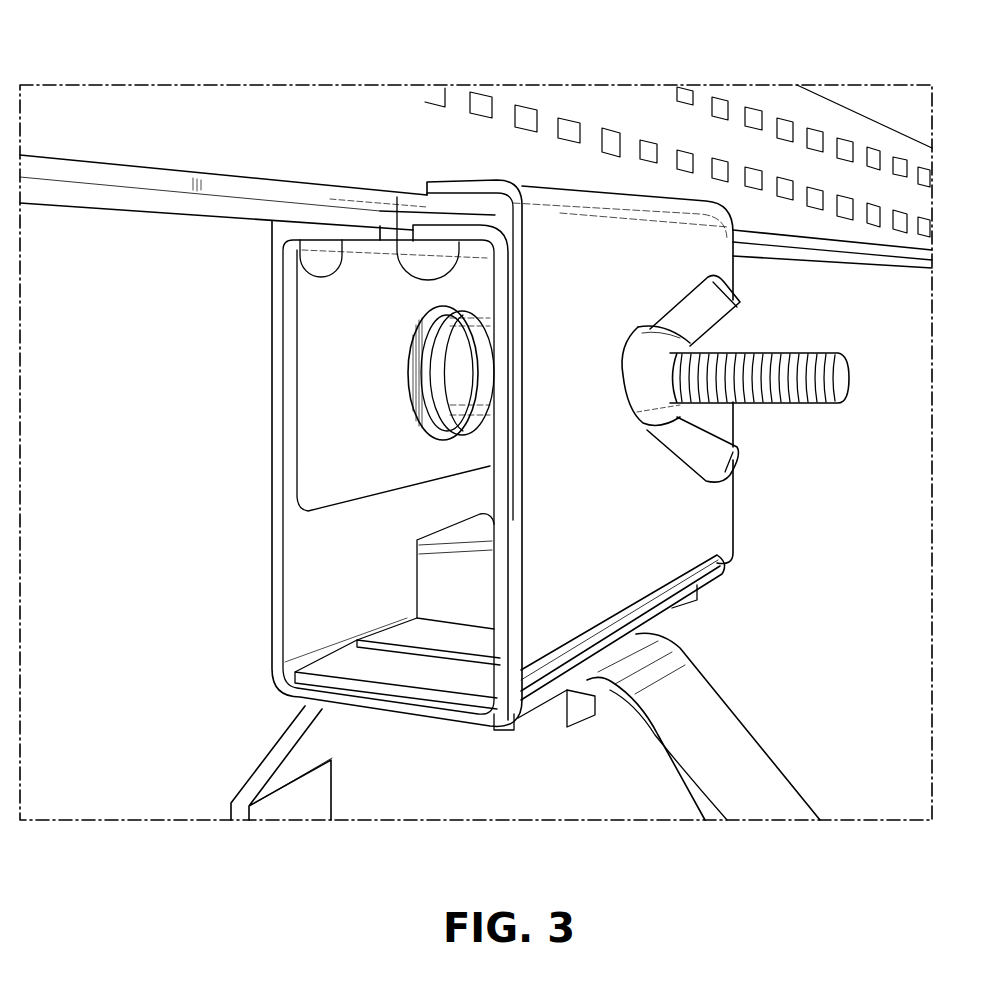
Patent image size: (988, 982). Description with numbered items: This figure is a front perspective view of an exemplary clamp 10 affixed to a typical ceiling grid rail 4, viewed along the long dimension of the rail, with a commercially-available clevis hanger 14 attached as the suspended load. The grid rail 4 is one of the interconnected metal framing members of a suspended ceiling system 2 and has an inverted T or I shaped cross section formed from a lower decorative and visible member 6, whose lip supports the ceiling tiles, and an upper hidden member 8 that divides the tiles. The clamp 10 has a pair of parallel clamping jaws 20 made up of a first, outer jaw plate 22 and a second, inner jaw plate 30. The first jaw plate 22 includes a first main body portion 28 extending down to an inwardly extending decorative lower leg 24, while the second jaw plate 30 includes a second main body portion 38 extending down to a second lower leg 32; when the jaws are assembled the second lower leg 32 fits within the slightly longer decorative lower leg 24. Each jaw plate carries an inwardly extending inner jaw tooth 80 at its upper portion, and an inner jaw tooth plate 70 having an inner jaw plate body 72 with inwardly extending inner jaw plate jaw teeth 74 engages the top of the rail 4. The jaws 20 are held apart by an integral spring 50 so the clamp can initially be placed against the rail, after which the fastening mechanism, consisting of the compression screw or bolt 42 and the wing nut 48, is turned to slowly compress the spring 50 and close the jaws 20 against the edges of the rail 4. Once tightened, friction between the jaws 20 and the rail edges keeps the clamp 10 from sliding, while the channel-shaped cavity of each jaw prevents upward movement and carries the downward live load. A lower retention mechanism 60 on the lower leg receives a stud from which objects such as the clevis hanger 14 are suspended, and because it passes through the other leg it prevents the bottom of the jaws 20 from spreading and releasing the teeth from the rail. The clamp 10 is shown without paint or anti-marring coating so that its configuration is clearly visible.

The suspended ceiling system 2 is at (153, 238).
The grid rail 4 is at (103, 132).
The lower decorative member 6 is at (903, 259).
The upper hidden member 8 is at (147, 155).
The clamp 10 is at (220, 477).
The clevis hanger 14 is at (727, 753).
The parallel clamping jaws 20 is at (290, 317).
The first jaw plate 22 is at (325, 532).
The decorative lower leg 24 is at (395, 730).
The first main body portion 28 is at (318, 587).
The second jaw plate 30 is at (667, 597).
The second lower leg 32 is at (390, 672).
The second main body portion 38 is at (687, 543).
The compression screw or bolt 42 is at (849, 379).
The wing nut 48 is at (742, 300).
The integral spring 50 is at (455, 443).
The lower retention mechanism 60 is at (455, 603).
The inner jaw tooth plate 70 is at (330, 397).
The inner jaw plate body 72 is at (335, 340).
The inner jaw plate jaw teeth 74 is at (397, 197).
The inner jaw tooth 80 is at (473, 188).